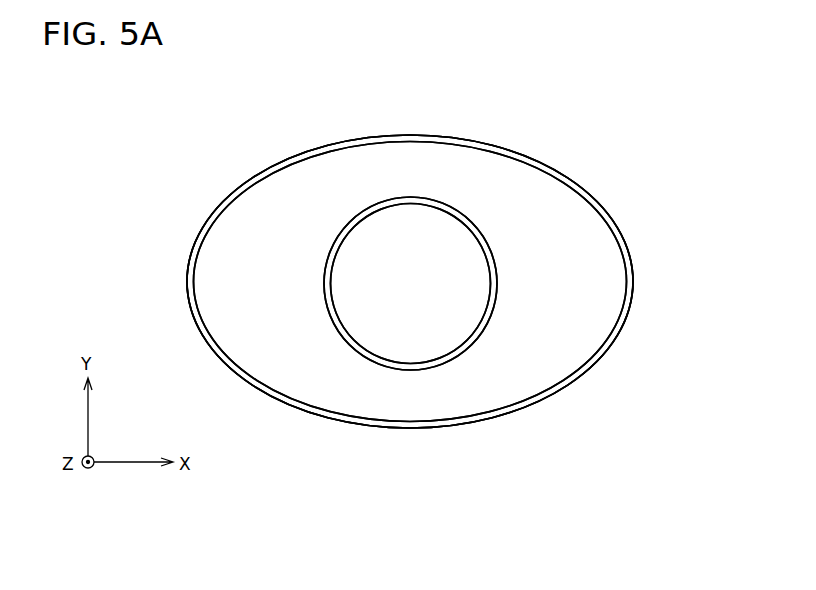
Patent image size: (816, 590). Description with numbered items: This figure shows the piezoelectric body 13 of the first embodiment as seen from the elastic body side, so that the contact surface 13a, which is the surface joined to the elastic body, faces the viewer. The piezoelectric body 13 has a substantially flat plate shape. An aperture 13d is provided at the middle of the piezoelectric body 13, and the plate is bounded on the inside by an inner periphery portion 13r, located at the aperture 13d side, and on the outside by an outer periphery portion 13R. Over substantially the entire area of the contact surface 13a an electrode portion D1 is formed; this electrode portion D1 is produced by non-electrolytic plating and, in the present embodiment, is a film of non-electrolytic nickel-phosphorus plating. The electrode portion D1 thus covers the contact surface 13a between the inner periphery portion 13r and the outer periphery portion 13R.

The piezoelectric body 13 is at (252, 152).
The contact surface 13a is at (582, 212).
The electrode portion D1 is at (607, 285).
The outer periphery portion 13R is at (583, 370).
The aperture 13d is at (411, 284).
The inner periphery portion 13r is at (438, 353).